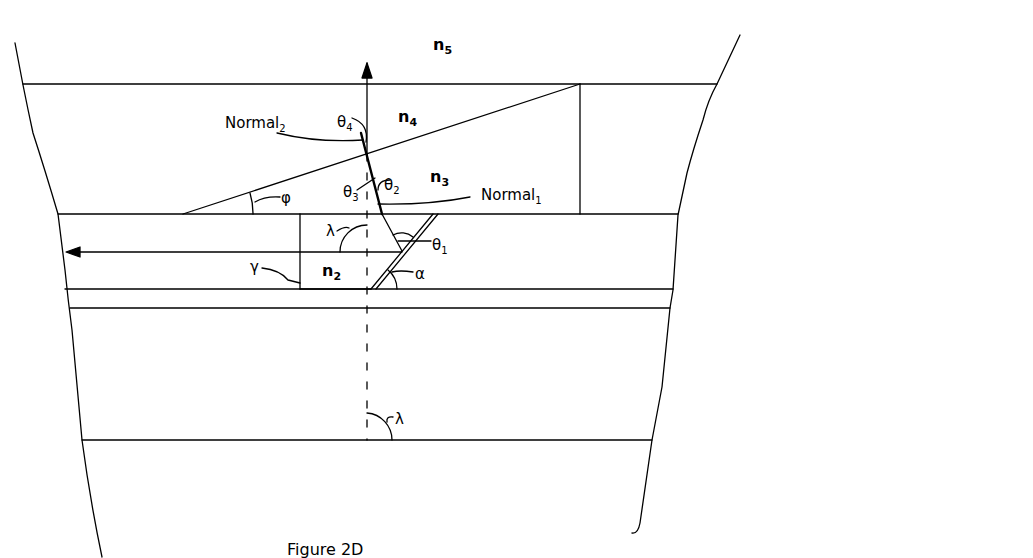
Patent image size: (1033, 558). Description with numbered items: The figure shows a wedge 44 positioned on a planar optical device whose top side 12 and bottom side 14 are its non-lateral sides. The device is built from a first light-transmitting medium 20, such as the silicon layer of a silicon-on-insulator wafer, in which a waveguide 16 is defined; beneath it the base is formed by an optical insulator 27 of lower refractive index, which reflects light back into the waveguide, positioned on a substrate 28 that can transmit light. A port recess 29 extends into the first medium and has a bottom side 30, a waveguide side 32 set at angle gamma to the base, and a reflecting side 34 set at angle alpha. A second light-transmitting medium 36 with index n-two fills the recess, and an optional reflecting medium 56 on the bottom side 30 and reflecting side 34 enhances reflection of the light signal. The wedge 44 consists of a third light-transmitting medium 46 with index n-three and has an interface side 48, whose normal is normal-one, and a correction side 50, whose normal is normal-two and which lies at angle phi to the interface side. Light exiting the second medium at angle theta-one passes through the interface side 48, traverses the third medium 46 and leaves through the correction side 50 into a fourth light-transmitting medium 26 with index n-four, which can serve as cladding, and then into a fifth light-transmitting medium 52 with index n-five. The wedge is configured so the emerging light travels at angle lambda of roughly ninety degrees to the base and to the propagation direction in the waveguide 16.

The top side 12 is at (187, 84).
The bottom side 14 is at (58, 290).
The waveguide 16 is at (125, 204).
The first light-transmitting medium 20 is at (70, 228).
The fourth light-transmitting medium 26 is at (668, 97).
The optical insulator 27 is at (657, 298).
The substrate 28 is at (658, 345).
The port recess 29 is at (313, 232).
The bottom side 30 is at (310, 289).
The waveguide side 32 is at (300, 236).
The reflecting side 34 is at (424, 237).
The second light-transmitting medium 36 is at (357, 289).
The wedge 44 is at (605, 137).
The third light-transmitting medium 46 is at (468, 145).
The interface side 48 is at (557, 214).
The correction side 50 is at (503, 112).
The fifth light-transmitting medium 52 is at (328, 45).
The reflecting medium 56 is at (426, 223).